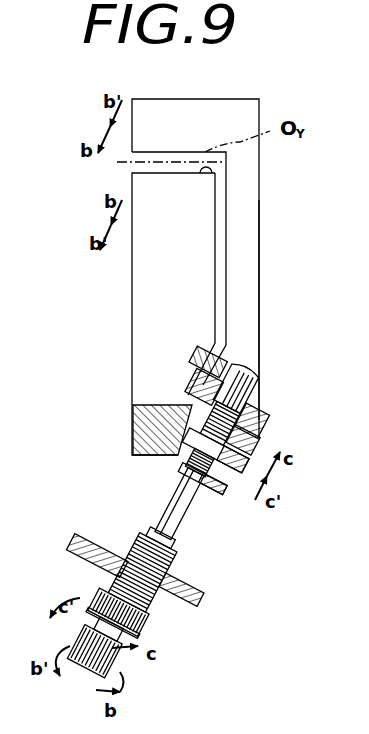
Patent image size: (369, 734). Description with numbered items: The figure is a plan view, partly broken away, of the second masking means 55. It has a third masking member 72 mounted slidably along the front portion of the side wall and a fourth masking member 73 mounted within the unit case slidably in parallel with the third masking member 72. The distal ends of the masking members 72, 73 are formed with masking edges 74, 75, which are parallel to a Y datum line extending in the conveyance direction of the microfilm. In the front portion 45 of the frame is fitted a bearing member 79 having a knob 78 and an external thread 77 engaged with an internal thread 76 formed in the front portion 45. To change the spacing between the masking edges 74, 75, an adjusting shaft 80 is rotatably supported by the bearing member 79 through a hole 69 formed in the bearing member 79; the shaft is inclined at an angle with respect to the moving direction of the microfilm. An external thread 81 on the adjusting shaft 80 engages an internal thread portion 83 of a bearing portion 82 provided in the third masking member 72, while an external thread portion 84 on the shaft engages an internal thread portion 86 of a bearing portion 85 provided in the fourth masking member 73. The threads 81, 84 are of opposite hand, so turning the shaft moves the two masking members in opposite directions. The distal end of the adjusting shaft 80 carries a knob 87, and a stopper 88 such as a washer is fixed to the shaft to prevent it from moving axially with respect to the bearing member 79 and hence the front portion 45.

The front portion 45 is at (196, 590).
The second masking means 55 is at (214, 258).
The hole 69 is at (104, 537).
The third masking member 72 is at (140, 332).
The fourth masking member 73 is at (258, 290).
The masking edge 74 is at (208, 174).
The masking edge 75 is at (170, 150).
The internal thread 76 is at (165, 617).
The external thread 77 is at (104, 575).
The knob 78 is at (150, 626).
The bearing member 79 is at (190, 556).
The adjusting shaft 80 is at (173, 490).
The external thread 81 is at (212, 494).
The bearing portion 82 is at (138, 433).
The internal thread portion 83 is at (150, 453).
The external thread portion 84 is at (262, 423).
The bearing portion 85 is at (258, 392).
The internal thread portion 86 is at (240, 356).
The knob 87 is at (126, 660).
The stopper 88 is at (143, 524).